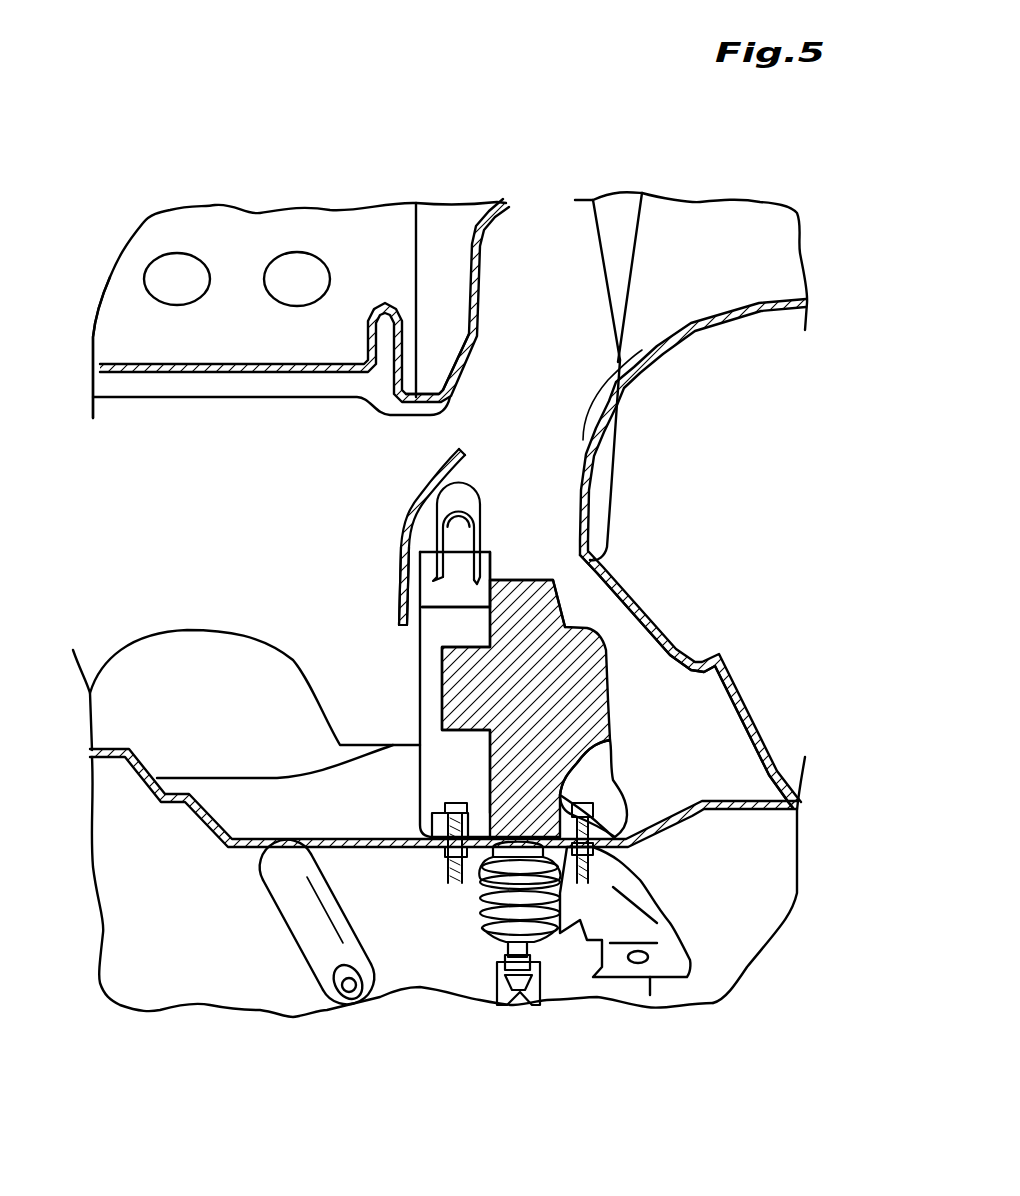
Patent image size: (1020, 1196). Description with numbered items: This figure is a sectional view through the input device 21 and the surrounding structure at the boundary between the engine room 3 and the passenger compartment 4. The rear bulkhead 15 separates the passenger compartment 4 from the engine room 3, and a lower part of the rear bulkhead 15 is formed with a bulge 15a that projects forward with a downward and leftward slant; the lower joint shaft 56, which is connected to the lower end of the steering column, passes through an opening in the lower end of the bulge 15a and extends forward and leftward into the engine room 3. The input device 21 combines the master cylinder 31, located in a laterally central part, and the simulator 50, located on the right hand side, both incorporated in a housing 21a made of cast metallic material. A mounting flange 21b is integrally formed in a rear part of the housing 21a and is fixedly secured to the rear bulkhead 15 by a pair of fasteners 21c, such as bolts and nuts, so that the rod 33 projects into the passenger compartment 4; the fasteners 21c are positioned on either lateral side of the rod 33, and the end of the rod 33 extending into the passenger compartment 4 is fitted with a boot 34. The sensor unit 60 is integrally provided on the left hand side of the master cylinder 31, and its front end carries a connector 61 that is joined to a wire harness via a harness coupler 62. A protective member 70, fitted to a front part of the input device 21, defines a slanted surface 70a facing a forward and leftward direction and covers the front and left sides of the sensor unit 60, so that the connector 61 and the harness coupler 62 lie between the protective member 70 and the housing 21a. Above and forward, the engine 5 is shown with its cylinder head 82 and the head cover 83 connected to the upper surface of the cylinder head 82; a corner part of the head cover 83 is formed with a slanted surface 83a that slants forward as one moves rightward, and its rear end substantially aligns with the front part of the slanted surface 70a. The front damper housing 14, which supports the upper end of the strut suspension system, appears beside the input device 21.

The engine room 3 is at (255, 523).
The passenger compartment 4 is at (178, 940).
The engine 5 is at (178, 200).
The front damper housing 14 is at (660, 355).
The rear bulkhead 15 is at (730, 812).
The bulge 15a is at (148, 645).
The input device 21 is at (527, 478).
The housing 21a is at (538, 588).
The mounting flange 21b is at (432, 845).
The fasteners 21c is at (440, 817).
The master cylinder 31 is at (490, 771).
The rod 33 is at (510, 948).
The boot 34 is at (480, 905).
The simulator 50 is at (600, 776).
The lower joint shaft 56 is at (290, 895).
The sensor unit 60 is at (420, 695).
The connector 61 is at (438, 597).
The harness coupler 62 is at (465, 495).
The protective member 70 is at (400, 573).
The slanted surface 70a is at (435, 482).
The cylinder head 82 is at (333, 230).
The head cover 83 is at (470, 296).
The slanted surface 83a is at (470, 362).